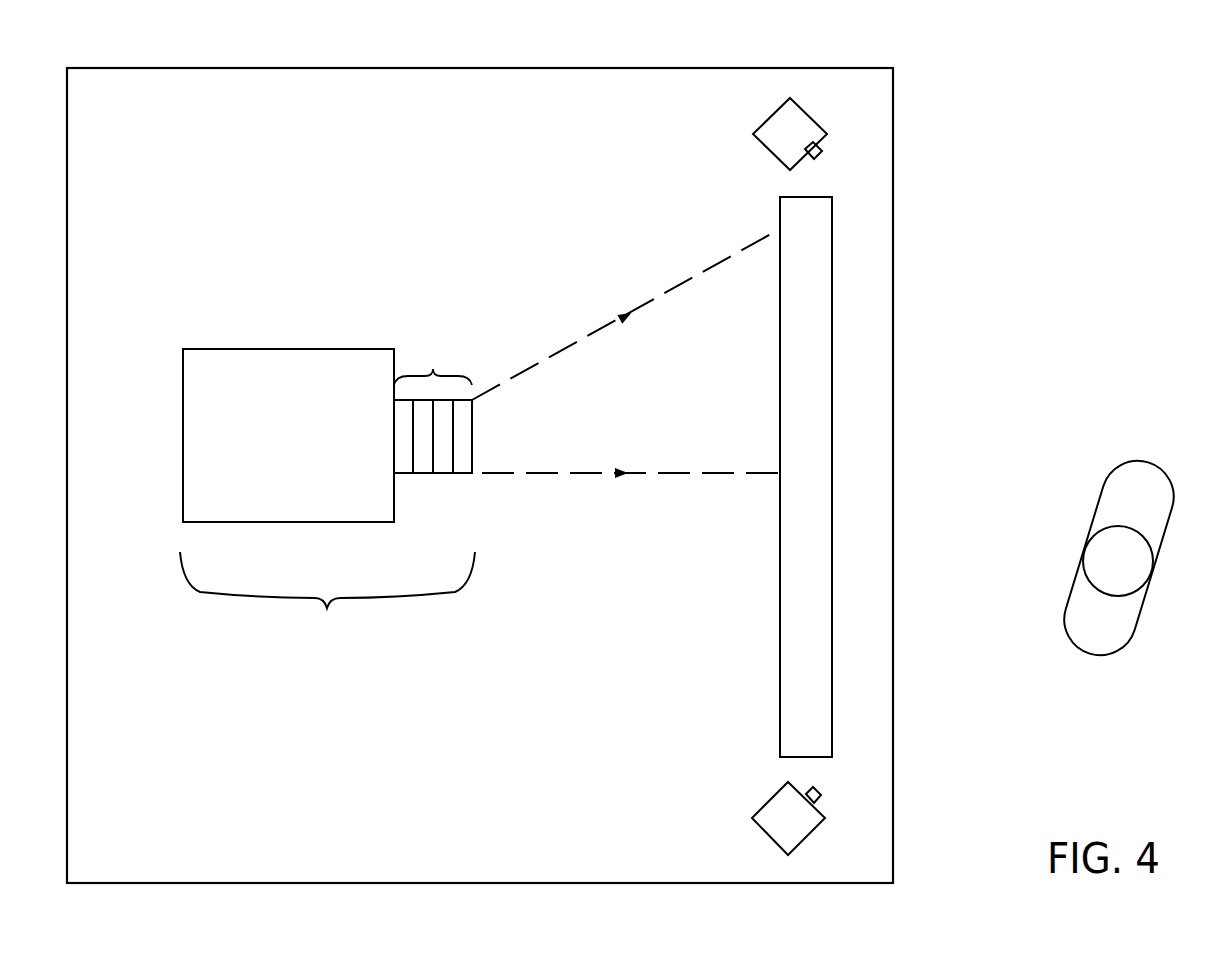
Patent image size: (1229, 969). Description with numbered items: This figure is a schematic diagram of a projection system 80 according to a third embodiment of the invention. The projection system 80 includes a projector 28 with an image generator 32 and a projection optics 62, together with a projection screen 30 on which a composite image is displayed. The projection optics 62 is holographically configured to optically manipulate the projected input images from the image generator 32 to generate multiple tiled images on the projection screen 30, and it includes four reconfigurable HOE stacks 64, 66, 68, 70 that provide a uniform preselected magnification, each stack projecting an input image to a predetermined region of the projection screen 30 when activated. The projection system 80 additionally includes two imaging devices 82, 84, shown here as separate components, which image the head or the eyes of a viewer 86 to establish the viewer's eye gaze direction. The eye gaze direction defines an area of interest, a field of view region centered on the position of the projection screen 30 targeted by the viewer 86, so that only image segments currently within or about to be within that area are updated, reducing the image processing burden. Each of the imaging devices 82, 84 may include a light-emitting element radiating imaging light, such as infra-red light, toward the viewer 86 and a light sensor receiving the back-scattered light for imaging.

The projector 28 is at (327, 598).
The projection screen 30 is at (820, 201).
The image generator 32 is at (292, 358).
The projection optics 62 is at (433, 408).
The reconfigurable HOE stack 64 is at (399, 468).
The reconfigurable HOE stack 66 is at (419, 468).
The reconfigurable HOE stack 68 is at (439, 468).
The reconfigurable HOE stack 70 is at (459, 468).
The projection system 80 is at (535, 78).
The imaging device 82 is at (760, 818).
The imaging device 84 is at (765, 124).
The viewer 86 is at (1152, 482).